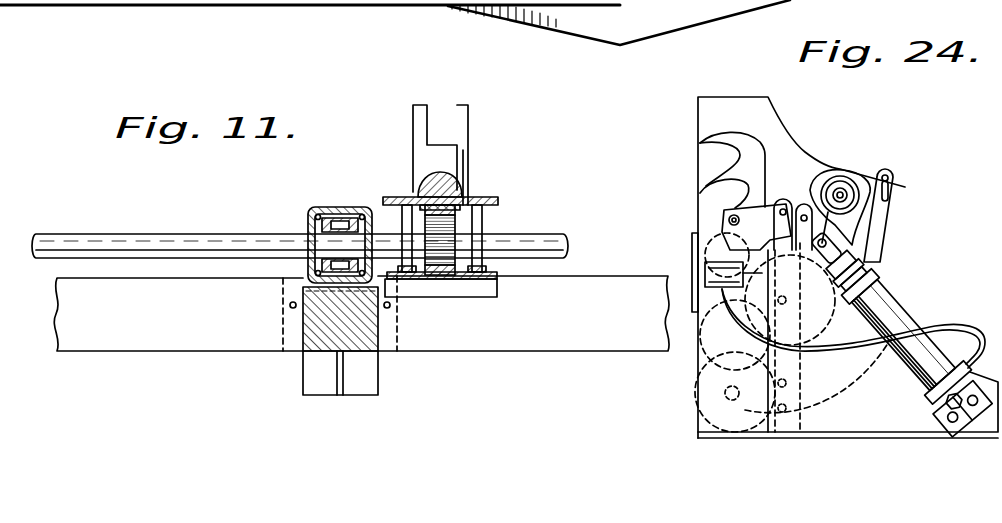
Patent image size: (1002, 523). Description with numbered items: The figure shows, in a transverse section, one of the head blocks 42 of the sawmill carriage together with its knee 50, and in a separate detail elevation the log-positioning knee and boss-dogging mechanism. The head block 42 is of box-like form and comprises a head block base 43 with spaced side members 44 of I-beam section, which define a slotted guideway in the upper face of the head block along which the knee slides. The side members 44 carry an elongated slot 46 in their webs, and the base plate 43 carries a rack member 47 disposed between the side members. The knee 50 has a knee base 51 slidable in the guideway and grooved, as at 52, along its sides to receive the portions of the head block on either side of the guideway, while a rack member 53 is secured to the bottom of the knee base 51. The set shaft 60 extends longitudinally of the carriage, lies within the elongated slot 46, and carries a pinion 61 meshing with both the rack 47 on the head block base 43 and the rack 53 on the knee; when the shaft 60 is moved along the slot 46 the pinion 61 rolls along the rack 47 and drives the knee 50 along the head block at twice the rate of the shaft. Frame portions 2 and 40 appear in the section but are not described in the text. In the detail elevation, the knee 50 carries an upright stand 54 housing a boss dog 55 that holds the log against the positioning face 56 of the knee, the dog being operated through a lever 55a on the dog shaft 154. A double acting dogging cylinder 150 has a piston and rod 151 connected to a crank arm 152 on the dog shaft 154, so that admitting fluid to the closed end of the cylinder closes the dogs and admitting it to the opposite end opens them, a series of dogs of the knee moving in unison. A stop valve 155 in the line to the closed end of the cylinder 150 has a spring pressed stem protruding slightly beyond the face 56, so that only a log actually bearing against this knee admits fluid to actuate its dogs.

In FIG. 11, the frame 2 is at (212, 343).
In FIG. 11, the frame member 40 is at (523, 313).
In FIG. 11, the head block 42 is at (478, 198).
In FIG. 11, the head block base 43 is at (450, 285).
In FIG. 11, the side members 44 is at (402, 217).
In FIG. 11, the elongated slot 46 is at (515, 230).
In FIG. 11, the rack member 47 is at (482, 273).
In FIG. 11, the knee 50 is at (462, 118).
In FIG. 24, the knee 50 is at (815, 387).
In FIG. 11, the knee base 51 is at (428, 186).
In FIG. 11, the groove 52 is at (462, 182).
In FIG. 11, the rack member 53 is at (462, 207).
In FIG. 11, the set shaft 60 is at (221, 243).
In FIG. 11, the pinion 61 is at (445, 255).
In FIG. 24, the upright stand 54 is at (700, 376).
In FIG. 24, the dog 55 is at (718, 140).
In FIG. 24, the lever 55a is at (893, 188).
In FIG. 24, the positioning face 56 is at (698, 398).
In FIG. 24, the dogging cylinder 150 is at (893, 302).
In FIG. 24, the piston and rod 151 is at (886, 246).
In FIG. 24, the crank arm 152 is at (815, 172).
In FIG. 24, the dog shaft 154 is at (880, 174).
In FIG. 24, the stop valve 155 is at (692, 262).